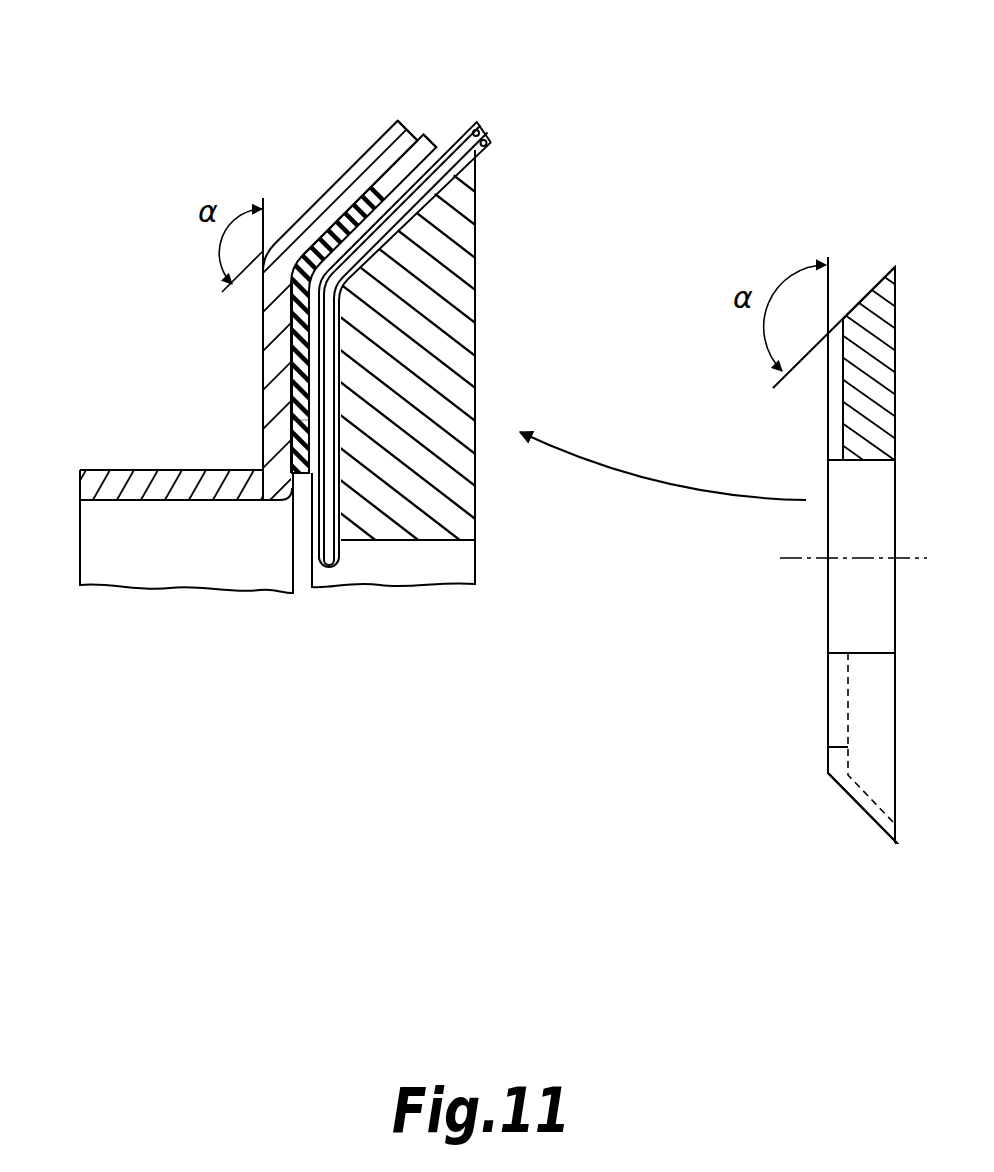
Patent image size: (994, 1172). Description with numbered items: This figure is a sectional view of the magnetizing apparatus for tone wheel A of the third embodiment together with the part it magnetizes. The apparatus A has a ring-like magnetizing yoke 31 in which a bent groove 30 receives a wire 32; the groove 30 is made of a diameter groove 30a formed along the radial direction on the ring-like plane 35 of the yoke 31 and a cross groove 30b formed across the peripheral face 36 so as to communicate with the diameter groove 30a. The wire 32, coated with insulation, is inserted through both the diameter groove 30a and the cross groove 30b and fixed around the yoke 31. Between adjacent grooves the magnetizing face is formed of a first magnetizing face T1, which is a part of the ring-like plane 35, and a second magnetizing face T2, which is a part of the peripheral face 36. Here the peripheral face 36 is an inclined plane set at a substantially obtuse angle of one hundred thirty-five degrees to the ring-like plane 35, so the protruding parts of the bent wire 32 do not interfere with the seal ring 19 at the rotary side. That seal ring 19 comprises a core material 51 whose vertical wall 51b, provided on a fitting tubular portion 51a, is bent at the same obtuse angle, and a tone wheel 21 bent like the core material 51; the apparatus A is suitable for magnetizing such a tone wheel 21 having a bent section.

The seal ring 19 is at (146, 462).
The tone wheel 21 is at (293, 322).
The groove 30 is at (330, 357).
The diameter groove 30a is at (843, 440).
The cross groove 30b is at (400, 174).
The magnetizing yoke 31 is at (462, 517).
The wire 32 is at (487, 139).
The ring-like plane 35 is at (828, 682).
The peripheral face 36 is at (857, 810).
The core material 51 is at (259, 372).
The fitting tubular portion 51a is at (107, 483).
The vertical wall 51b is at (323, 214).
The first magnetizing face T1 is at (292, 423).
The second magnetizing face T2 is at (353, 168).
The magnetizing apparatus for tone wheel A is at (493, 251).